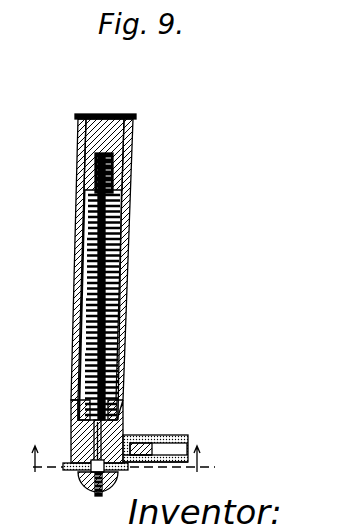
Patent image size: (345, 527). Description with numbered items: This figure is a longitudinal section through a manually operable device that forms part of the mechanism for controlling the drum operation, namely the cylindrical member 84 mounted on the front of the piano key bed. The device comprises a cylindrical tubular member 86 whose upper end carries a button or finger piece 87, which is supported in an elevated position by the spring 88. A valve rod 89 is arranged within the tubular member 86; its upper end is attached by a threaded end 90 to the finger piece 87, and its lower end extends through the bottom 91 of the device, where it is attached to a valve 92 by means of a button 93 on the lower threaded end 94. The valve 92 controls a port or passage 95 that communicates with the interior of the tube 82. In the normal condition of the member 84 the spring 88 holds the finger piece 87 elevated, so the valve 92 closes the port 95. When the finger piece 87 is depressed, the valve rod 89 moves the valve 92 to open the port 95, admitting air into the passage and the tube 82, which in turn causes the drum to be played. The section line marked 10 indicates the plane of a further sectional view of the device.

The finger piece 87 is at (129, 142).
The threaded end 90 is at (128, 168).
The cylindrical member 84 is at (124, 185).
The spring 88 is at (120, 223).
The cylindrical tubular member 86 is at (124, 284).
The valve rod 89 is at (116, 305).
The tube 82 is at (173, 435).
The bottom 91 is at (72, 443).
The valve 92 is at (73, 471).
The button 93 is at (103, 493).
The lower threaded end 94 is at (97, 493).
The port 95 is at (126, 468).
The section line 10- 10 is at (128, 463).